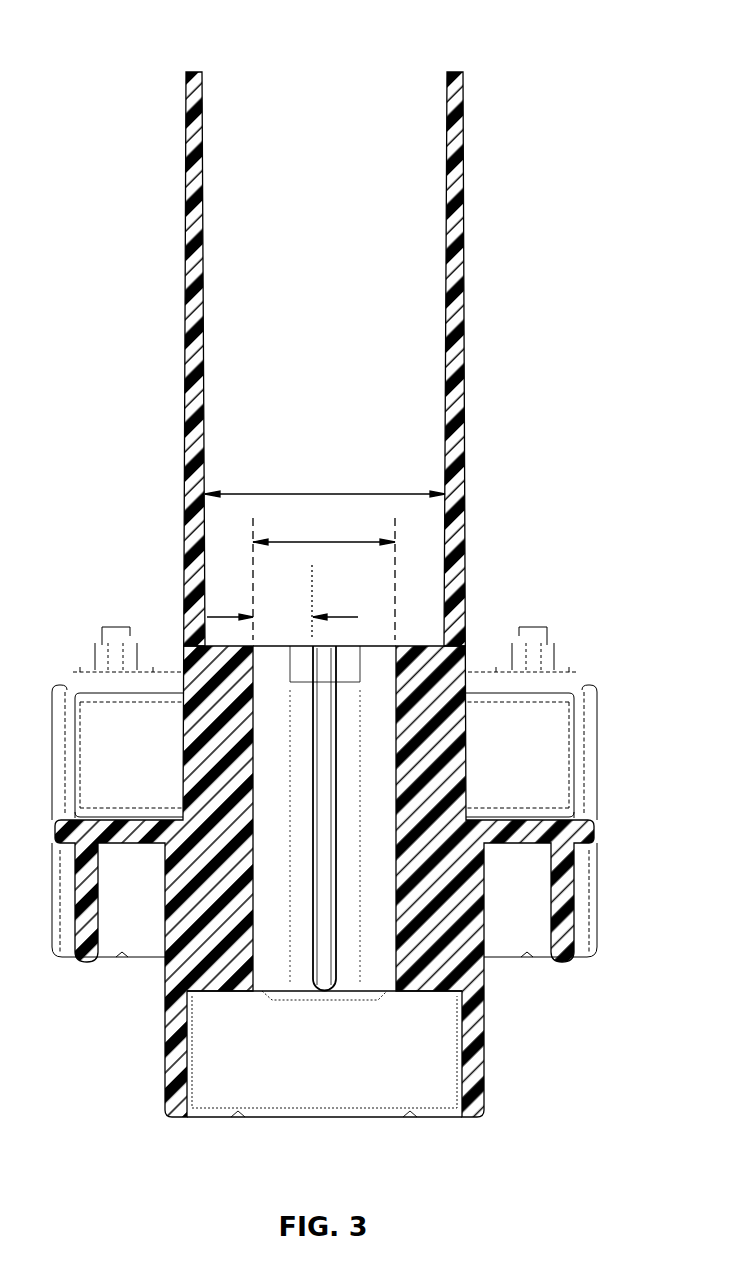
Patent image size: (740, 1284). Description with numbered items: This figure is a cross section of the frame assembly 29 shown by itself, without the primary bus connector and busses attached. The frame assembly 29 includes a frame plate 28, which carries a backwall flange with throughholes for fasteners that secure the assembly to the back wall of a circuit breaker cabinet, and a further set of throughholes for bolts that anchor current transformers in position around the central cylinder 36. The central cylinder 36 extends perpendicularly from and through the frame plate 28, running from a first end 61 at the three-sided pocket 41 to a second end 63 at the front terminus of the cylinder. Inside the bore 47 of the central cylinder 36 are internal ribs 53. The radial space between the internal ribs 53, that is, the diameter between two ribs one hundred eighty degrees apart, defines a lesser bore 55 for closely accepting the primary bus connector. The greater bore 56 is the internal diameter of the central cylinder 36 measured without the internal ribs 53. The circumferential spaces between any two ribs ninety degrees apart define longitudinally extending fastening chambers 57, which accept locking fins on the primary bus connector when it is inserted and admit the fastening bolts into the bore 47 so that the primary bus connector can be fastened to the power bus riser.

The frame plate 28 is at (132, 843).
The frame assembly 29 is at (566, 580).
The central cylinder 36 is at (462, 197).
The three-sided pocket 41 is at (433, 1112).
The bore 47 is at (409, 88).
The internal ribs 53 is at (243, 708).
The lesser bore 55 is at (320, 542).
The greater bore 56 is at (279, 494).
The fastening chambers 57 is at (342, 617).
The first end 61 is at (262, 1117).
The second end 63 is at (242, 72).